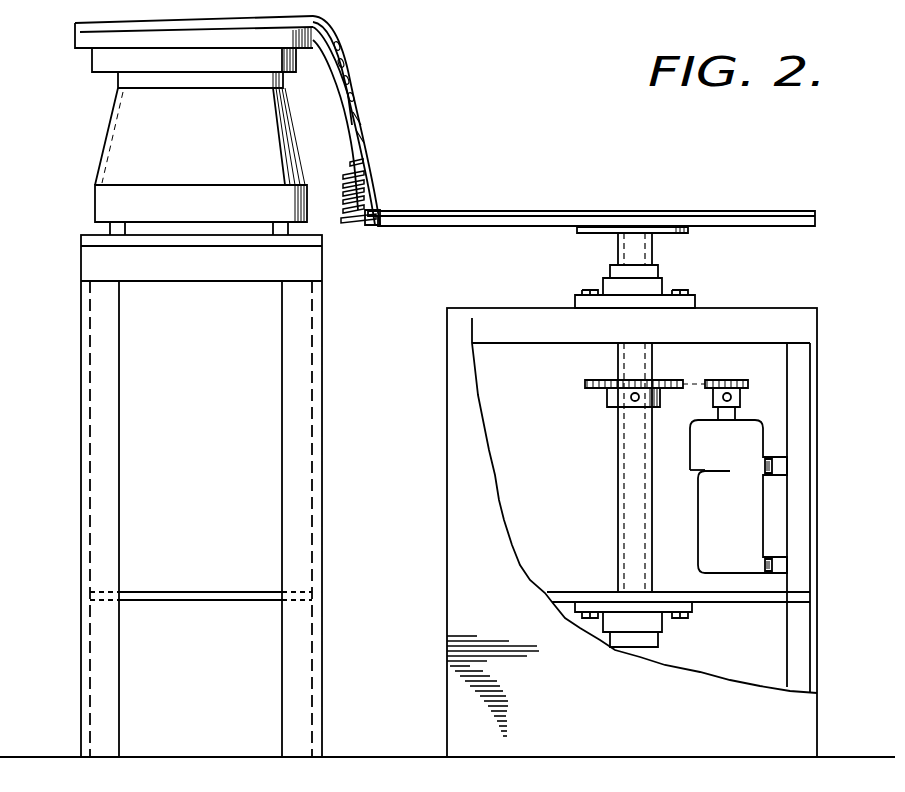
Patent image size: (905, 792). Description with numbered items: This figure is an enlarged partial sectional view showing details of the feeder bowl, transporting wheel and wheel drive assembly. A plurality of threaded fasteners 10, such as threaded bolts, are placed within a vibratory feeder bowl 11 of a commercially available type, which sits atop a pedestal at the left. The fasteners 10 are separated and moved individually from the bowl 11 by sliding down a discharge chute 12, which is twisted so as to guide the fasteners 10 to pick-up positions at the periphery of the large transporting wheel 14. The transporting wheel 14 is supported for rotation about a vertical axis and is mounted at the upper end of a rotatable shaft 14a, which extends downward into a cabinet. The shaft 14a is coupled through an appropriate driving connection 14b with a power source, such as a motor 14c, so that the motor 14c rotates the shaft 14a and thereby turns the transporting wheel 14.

The threaded fasteners 10 is at (354, 165).
The vibratory feeder bowl 11 is at (110, 143).
The discharge chute 12 is at (372, 120).
The transporting wheel 14 is at (514, 211).
The rotatable shaft 14a is at (653, 250).
The driving connection 14b is at (671, 381).
The motor 14c is at (765, 528).